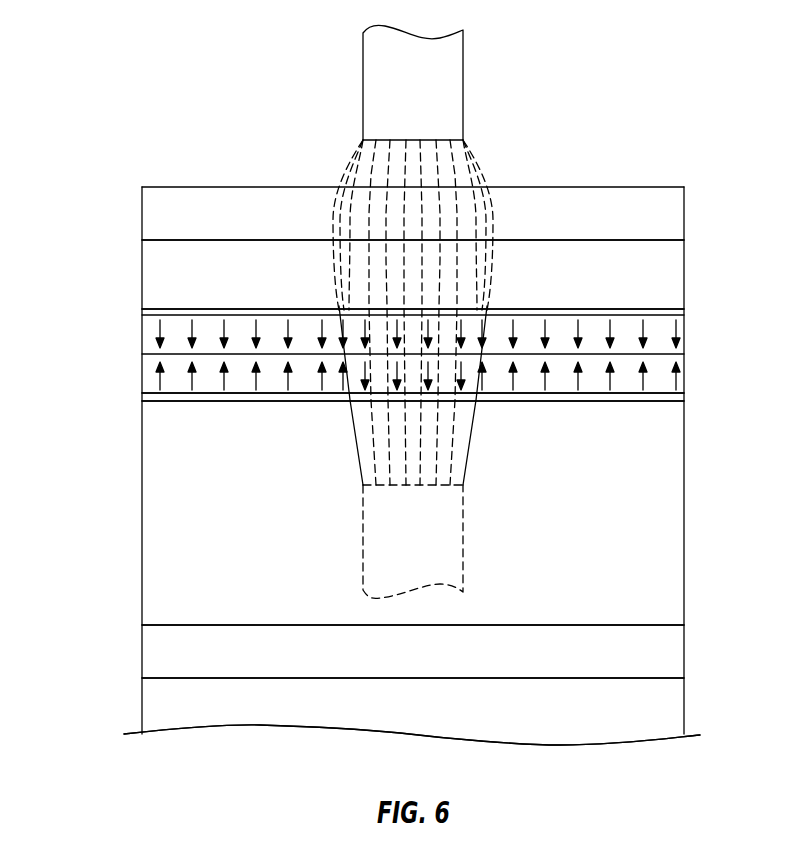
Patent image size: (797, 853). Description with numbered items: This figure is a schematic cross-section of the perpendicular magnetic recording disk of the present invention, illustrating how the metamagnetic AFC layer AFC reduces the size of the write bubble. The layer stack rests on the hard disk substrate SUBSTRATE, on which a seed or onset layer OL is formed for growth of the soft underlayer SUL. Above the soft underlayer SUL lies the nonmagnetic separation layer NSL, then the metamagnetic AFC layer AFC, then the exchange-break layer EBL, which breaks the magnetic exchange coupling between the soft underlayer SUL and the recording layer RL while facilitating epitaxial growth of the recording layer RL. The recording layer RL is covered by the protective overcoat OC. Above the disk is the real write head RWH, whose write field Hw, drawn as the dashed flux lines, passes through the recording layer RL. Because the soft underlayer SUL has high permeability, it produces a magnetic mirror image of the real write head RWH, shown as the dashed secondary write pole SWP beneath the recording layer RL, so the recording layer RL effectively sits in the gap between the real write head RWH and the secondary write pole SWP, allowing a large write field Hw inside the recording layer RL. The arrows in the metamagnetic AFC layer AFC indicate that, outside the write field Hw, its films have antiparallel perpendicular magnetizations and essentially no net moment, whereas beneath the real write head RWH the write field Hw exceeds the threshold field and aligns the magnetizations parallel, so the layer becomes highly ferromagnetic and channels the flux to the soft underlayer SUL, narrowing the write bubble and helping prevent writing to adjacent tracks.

The real write head RWH is at (413, 82).
The protective overcoat OC is at (413, 213).
The recording layer RL is at (413, 274).
The write field Hw is at (490, 298).
The exchange-break layer EBL is at (684, 312).
The metamagnetic AFC layer AFC is at (128, 393).
The nonmagnetic separation layer NSL is at (684, 400).
The soft underlayer SUL is at (413, 513).
The secondary write pole SWP is at (413, 541).
The onset layer OL is at (413, 651).
The hard disk substrate SUBSTRATE is at (412, 711).